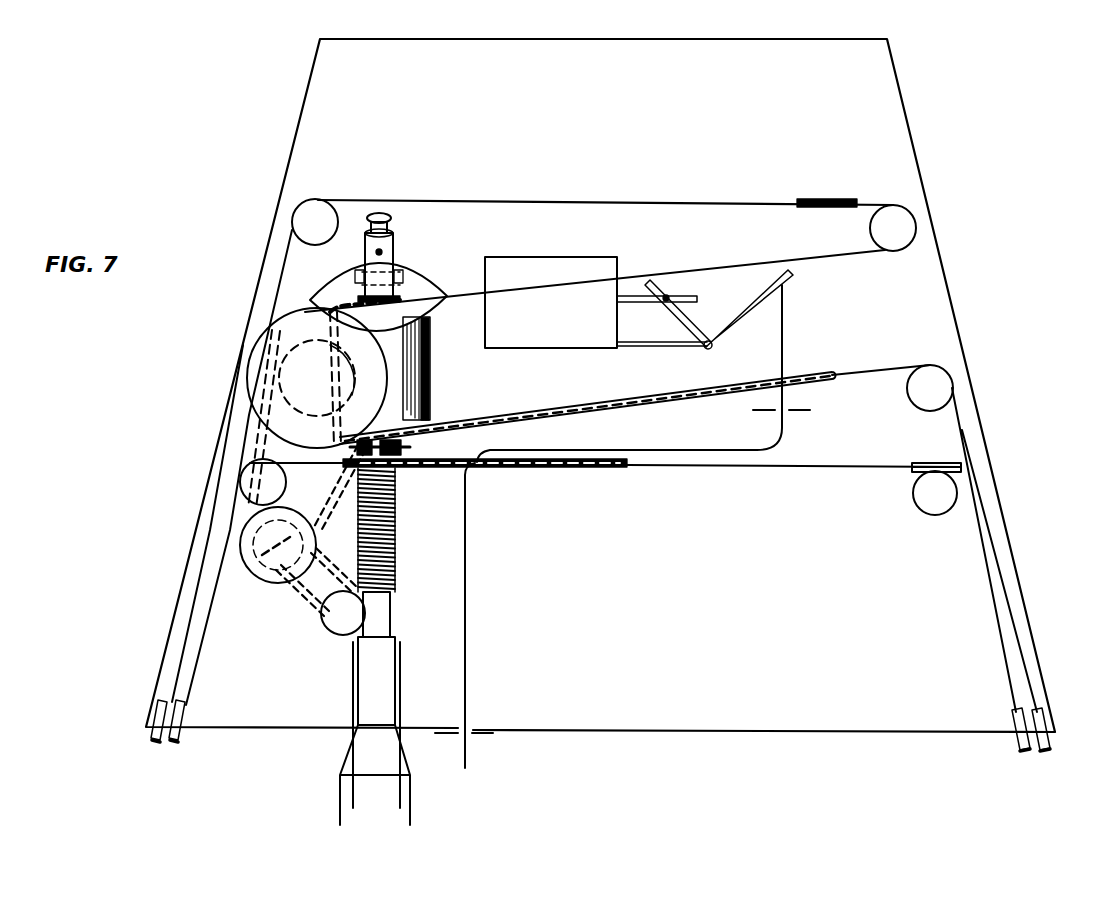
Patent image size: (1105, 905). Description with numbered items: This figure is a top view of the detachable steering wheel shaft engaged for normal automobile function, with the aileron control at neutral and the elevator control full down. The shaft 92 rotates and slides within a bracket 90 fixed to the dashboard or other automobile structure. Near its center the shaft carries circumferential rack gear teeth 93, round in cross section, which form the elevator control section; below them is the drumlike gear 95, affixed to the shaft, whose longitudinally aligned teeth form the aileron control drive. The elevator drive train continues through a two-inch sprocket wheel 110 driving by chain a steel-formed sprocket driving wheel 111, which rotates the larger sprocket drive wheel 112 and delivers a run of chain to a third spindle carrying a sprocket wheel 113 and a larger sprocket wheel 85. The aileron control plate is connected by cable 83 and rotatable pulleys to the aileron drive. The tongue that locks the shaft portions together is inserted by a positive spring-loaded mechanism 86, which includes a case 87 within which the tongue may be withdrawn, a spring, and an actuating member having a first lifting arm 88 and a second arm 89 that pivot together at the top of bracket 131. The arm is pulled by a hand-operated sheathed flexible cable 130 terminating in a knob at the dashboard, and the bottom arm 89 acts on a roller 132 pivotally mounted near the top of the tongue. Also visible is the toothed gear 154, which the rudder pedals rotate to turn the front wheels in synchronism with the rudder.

The cable 83 is at (862, 378).
The sprocket wheel 85 is at (256, 350).
The spring-loaded mechanism 86 is at (639, 302).
The case 87 is at (537, 349).
The first lifting arm 88 is at (750, 313).
The second arm 89 is at (672, 316).
The bracket 90 is at (402, 673).
The shaft 92 is at (392, 612).
The rack gear teeth 93 is at (397, 533).
The drumlike gear 95 is at (430, 363).
The sprocket wheel 110 is at (326, 636).
The sprocket driving wheel 111 is at (250, 570).
The sprocket drive wheel 112 is at (272, 585).
The sprocket wheel 113 is at (292, 382).
The sheathed flexible cable 130 is at (783, 311).
The bracket 131 is at (641, 348).
The roller 132 is at (674, 293).
The toothed gear 154 is at (425, 273).